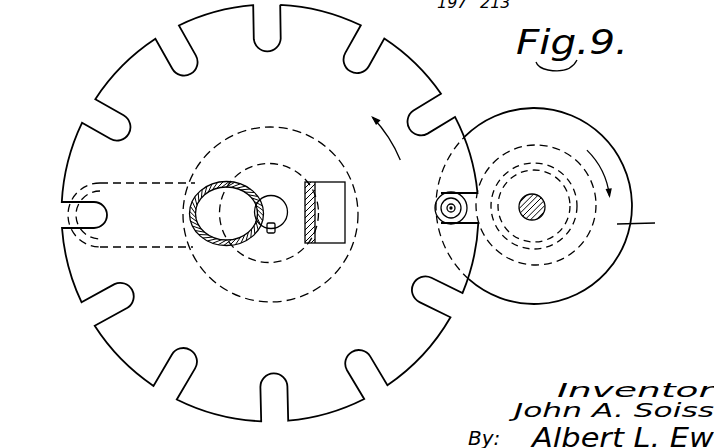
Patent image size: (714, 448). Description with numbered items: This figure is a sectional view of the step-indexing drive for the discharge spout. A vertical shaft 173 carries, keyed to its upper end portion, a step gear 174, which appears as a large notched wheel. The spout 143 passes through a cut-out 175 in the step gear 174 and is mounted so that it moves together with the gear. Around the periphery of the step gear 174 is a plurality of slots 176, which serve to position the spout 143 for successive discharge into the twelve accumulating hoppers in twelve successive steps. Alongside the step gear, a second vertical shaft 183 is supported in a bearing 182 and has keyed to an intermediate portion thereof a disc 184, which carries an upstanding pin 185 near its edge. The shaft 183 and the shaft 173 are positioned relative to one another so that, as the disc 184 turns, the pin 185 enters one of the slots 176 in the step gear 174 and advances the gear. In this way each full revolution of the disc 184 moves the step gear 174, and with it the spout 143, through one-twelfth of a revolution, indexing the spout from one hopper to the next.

The step gear 174 is at (99, 343).
The slots 176 is at (96, 103).
The spout 143 is at (75, 210).
The cut-out 175 is at (221, 245).
The vertical shaft 173 is at (277, 223).
The bearing 182 is at (557, 235).
The vertical shaft 183 is at (528, 219).
The disc 184 is at (655, 223).
The upstanding pin 185 is at (443, 223).